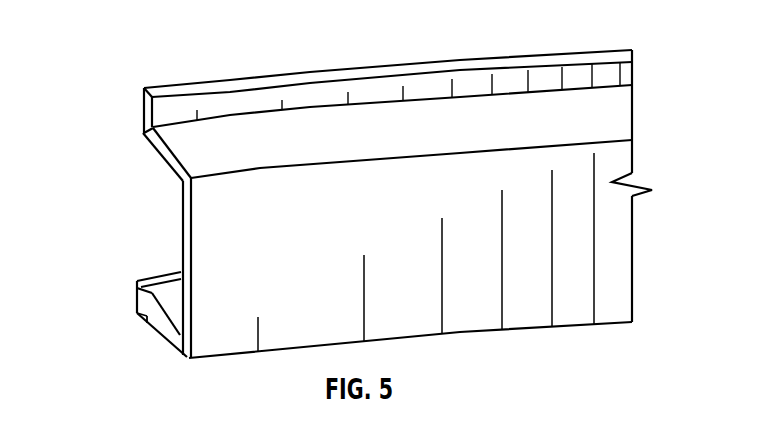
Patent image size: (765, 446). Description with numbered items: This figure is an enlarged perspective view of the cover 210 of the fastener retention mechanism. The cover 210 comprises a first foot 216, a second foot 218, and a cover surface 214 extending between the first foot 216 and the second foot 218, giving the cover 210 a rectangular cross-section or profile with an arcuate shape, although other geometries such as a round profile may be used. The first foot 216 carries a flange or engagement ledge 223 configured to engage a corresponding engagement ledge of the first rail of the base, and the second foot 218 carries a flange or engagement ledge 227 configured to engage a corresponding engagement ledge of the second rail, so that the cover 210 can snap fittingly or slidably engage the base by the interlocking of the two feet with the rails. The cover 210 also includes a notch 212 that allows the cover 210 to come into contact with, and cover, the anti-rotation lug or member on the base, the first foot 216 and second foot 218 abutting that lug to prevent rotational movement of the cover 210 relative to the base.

The cover 210 is at (355, 203).
The notch 212 is at (133, 125).
The cover surface 214 is at (215, 220).
The first foot 216 is at (268, 77).
The second foot 218 is at (137, 317).
The flange or engagement ledge 223 is at (385, 88).
The flange or engagement ledge 227 is at (147, 328).